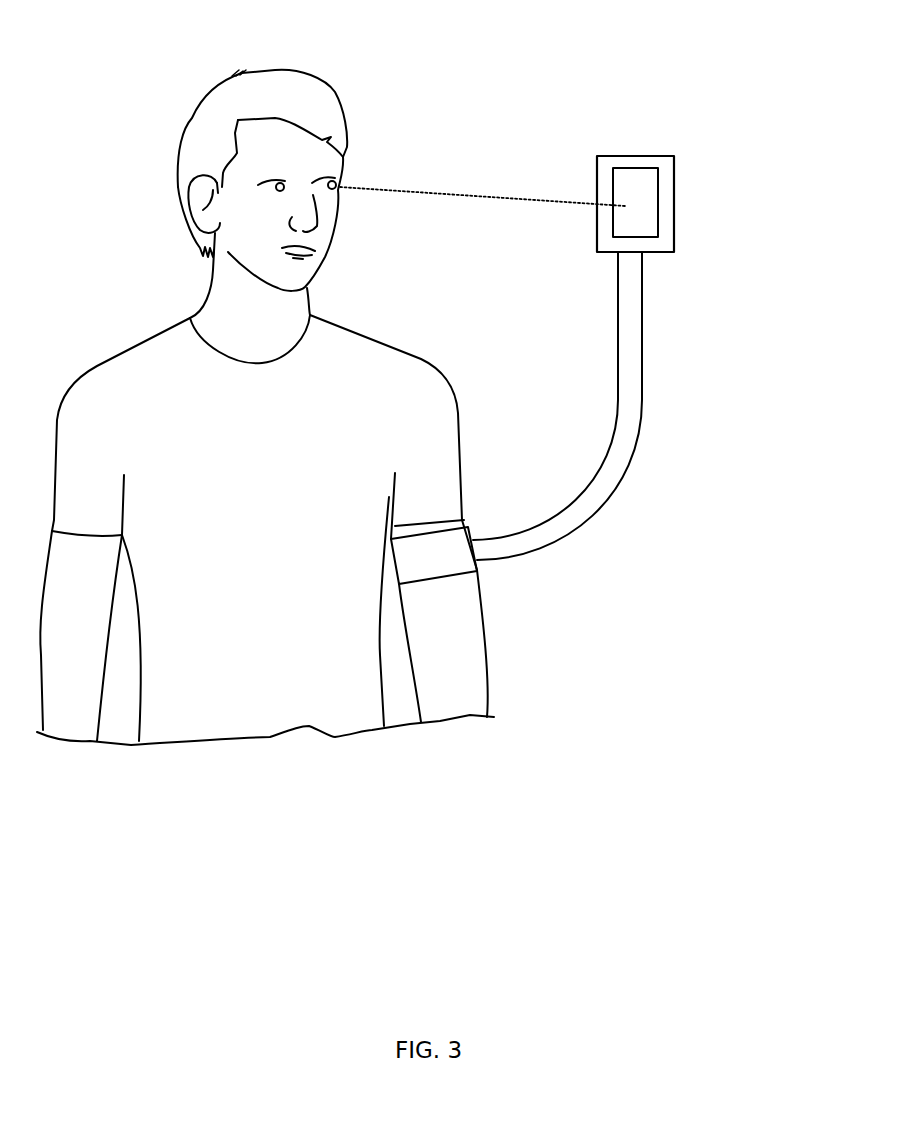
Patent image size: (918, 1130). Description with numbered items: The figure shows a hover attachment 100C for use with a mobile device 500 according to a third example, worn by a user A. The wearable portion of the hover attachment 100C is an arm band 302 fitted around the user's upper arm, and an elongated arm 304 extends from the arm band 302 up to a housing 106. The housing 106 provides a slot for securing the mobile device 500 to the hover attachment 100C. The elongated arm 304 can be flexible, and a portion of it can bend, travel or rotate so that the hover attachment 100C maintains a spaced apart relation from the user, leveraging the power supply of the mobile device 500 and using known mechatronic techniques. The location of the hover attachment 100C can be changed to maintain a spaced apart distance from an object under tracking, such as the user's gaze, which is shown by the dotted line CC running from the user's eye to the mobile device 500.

The user / person A is at (192, 118).
The Line CC is at (444, 193).
The hover attachment 100C is at (602, 147).
The housing 106 is at (645, 157).
The mobile device 500 is at (643, 197).
The elongated arm 304 is at (633, 453).
The arm band 302 is at (437, 567).